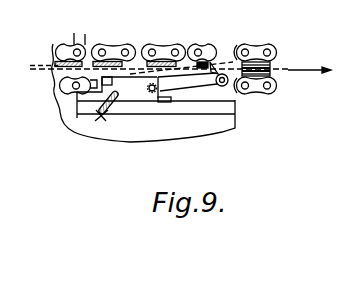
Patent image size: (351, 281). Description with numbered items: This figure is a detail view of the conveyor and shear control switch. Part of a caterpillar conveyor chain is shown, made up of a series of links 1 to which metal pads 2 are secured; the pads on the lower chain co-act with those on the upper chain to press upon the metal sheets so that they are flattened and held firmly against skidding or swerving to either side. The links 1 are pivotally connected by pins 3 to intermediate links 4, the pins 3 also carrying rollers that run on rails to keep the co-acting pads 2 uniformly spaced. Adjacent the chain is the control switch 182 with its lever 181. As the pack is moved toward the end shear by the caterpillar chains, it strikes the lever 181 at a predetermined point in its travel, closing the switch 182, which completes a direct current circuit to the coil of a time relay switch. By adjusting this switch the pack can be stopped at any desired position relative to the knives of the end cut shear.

The links 1 is at (63, 37).
The metal pads 2 is at (56, 75).
The pins 3 is at (85, 47).
The intermediate links 4 is at (133, 48).
The lever 181 is at (216, 86).
The switch 182 is at (133, 100).